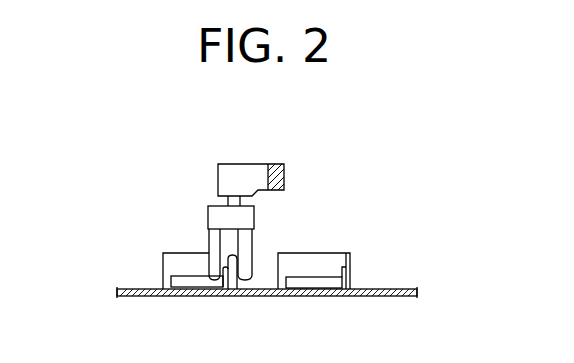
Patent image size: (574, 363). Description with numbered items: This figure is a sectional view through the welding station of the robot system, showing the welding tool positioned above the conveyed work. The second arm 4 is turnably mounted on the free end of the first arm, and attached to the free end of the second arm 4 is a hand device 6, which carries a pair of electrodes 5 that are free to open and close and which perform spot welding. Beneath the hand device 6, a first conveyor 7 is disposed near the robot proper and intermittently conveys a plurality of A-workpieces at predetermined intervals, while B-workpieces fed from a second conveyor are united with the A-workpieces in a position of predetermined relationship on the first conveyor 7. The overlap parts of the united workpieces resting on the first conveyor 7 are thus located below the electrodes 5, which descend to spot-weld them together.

The second arm 4 is at (275, 163).
The electrodes 5 is at (252, 240).
The hand device 6 is at (208, 214).
The first conveyor 7 is at (388, 289).